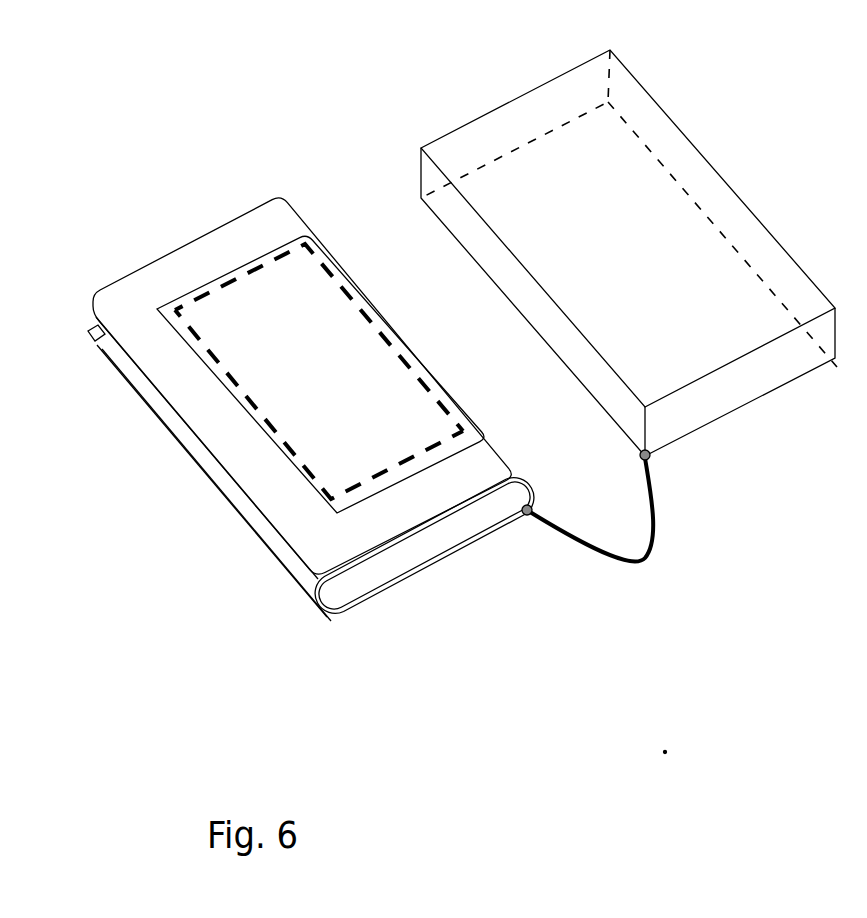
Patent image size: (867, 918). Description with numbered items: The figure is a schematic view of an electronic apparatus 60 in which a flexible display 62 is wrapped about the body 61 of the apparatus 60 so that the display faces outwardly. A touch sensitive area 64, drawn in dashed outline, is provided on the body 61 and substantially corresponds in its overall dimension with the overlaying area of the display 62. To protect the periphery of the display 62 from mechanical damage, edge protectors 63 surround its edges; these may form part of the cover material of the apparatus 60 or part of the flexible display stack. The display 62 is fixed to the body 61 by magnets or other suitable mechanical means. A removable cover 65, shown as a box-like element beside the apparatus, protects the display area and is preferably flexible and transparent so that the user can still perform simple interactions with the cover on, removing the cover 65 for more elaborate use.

The electronic apparatus 60 is at (70, 162).
The body 61 is at (435, 548).
The flexible display 62 is at (423, 360).
The edge protectors 63 is at (255, 210).
The touch sensitive area 64 is at (217, 368).
The removable cover 65 is at (678, 157).